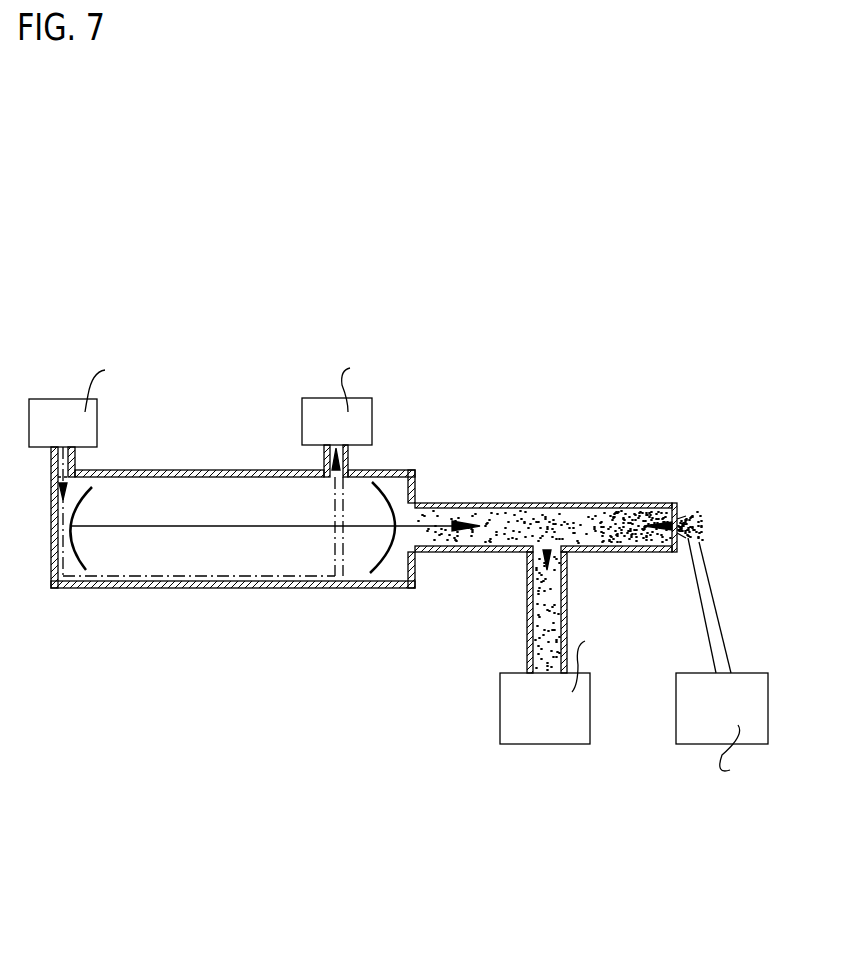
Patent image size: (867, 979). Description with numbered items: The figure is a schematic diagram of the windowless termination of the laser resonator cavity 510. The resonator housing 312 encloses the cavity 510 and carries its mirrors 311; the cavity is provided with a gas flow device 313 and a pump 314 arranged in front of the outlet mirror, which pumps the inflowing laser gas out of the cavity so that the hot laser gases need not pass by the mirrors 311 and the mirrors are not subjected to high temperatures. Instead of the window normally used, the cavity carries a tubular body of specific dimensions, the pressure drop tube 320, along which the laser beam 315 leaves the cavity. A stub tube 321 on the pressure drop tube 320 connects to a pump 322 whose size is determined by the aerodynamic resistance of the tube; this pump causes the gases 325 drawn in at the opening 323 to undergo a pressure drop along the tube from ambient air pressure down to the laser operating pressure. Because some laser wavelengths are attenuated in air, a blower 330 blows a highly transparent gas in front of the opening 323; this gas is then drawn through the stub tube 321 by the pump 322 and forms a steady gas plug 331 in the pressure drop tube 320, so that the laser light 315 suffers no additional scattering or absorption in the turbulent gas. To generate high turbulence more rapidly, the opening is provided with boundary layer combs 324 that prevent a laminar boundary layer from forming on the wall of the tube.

The mirrors 311 is at (75, 560).
The laser discharge chamber 312 is at (405, 548).
The gas flow device 313 is at (63, 410).
The pump 314 is at (325, 412).
The laser beam 315 is at (282, 527).
The pressure drop tube 320 is at (497, 503).
The branch pipe 321 is at (527, 593).
The pump 322 is at (555, 722).
The opening 323 is at (690, 508).
The boundary layer combs 324 is at (677, 503).
The gases 325 is at (700, 520).
The blower 330 is at (716, 722).
The gas plug 331 is at (607, 516).
The laser resonator cavity 510 is at (195, 588).